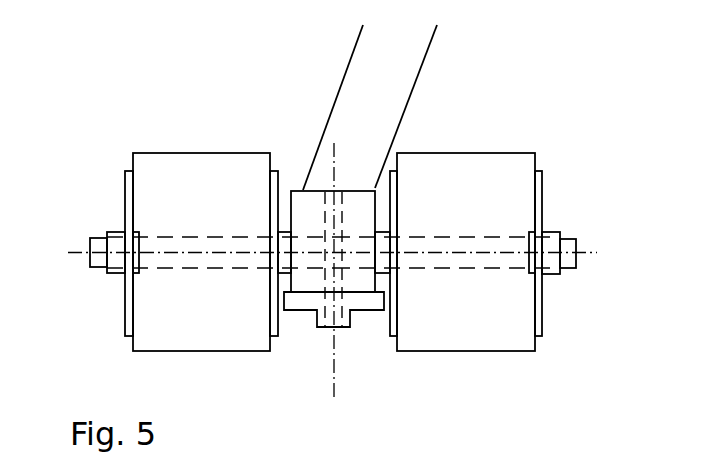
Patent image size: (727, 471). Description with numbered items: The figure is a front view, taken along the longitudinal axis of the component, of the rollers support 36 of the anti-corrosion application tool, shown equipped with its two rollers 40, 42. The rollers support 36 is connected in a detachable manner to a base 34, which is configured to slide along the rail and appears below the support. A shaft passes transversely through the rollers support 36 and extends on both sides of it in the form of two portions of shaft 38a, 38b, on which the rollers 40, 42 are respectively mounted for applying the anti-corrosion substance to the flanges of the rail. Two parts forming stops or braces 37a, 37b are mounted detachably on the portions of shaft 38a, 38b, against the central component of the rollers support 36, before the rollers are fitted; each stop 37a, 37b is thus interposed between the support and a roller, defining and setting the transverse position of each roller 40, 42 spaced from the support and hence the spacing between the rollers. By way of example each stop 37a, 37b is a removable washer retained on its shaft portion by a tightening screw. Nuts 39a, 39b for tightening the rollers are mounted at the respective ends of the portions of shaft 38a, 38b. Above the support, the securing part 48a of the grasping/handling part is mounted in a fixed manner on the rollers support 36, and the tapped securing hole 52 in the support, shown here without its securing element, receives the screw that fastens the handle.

The base 34 is at (306, 310).
The rollers support 36 is at (376, 190).
The stop 37a is at (382, 250).
The stop 37b is at (284, 240).
The portion of shaft 38a is at (501, 260).
The portion of shaft 38b is at (208, 253).
The nut 39a is at (553, 228).
The nut 39b is at (115, 233).
The roller 40 is at (510, 153).
The roller 42 is at (170, 153).
The securing part 48a is at (423, 68).
The securing hole 52 is at (337, 215).